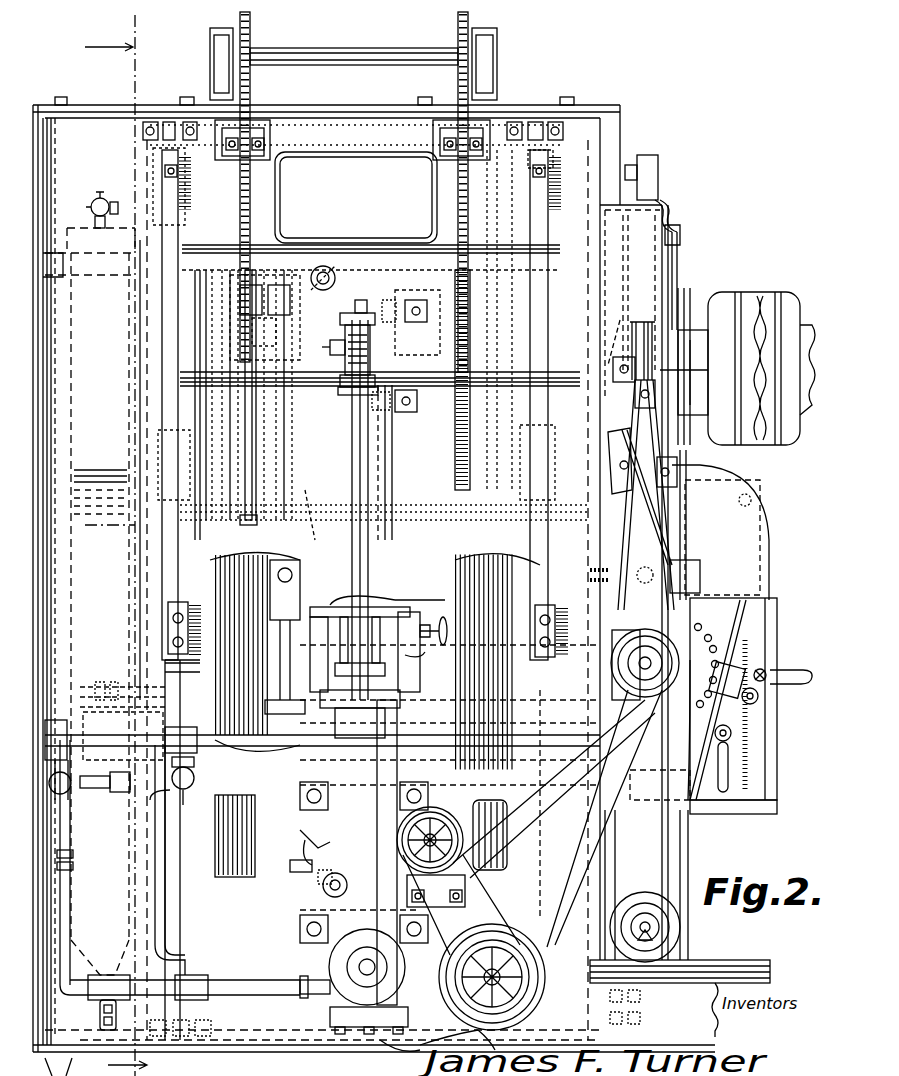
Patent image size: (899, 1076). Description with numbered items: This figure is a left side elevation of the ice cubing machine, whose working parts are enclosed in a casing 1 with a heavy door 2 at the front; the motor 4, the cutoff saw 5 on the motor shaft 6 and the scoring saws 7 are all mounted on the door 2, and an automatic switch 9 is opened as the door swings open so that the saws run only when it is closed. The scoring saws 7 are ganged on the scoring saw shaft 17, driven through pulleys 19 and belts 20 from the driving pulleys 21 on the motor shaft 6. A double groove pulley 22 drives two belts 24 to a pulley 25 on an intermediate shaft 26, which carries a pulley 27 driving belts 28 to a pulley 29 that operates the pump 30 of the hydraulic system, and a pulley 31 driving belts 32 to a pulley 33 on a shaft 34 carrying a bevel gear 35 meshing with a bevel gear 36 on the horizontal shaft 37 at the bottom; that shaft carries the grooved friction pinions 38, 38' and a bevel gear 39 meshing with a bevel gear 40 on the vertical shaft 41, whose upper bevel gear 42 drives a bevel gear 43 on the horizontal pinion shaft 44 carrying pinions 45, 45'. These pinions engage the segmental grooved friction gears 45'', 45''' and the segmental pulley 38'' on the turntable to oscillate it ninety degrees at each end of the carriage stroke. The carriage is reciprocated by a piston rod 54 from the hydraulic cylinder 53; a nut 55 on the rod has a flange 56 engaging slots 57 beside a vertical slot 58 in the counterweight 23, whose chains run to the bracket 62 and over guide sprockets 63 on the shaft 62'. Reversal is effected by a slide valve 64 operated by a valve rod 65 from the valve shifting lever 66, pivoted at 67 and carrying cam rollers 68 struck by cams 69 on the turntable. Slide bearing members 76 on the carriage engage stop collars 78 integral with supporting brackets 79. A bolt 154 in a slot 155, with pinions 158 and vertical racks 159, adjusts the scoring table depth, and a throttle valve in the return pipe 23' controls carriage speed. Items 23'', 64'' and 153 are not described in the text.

The casing 1 is at (88, 118).
The door 2 is at (675, 212).
The motor 4 is at (756, 266).
The cutoff saw 5 is at (640, 247).
The motor shaft 6 is at (728, 320).
The scoring saws 7 is at (645, 628).
The automatic switch 9 is at (658, 170).
The scoring saw shaft 17 is at (680, 642).
The pulleys 19 is at (690, 612).
The belts 20 is at (672, 530).
The driving pulleys 21 is at (633, 328).
The double groove pulley 22 is at (672, 728).
The counterweight 23 is at (240, 563).
The pipe 23' is at (178, 885).
The pipe connection 23'' is at (322, 859).
The belts 24 is at (612, 852).
The pulley 25 is at (436, 1050).
The intermediate shaft 26 is at (454, 979).
The pulley 27 is at (555, 948).
The belts 28 is at (390, 1058).
The pulley 29 is at (327, 1002).
The pump 30 is at (330, 962).
The pulley 31 is at (481, 1047).
The belts 32 is at (558, 912).
The pulley 33 is at (437, 808).
The shaft 34 is at (529, 827).
The bevel gear 35 is at (466, 812).
The bevel gear 36 is at (436, 900).
The horizontal shaft 37 is at (312, 838).
The grooved friction pinion 38 is at (326, 692).
The grooved friction pinion 38' is at (236, 849).
The segmental grooved friction pulley 38'' is at (530, 583).
The bevel gear 39 is at (340, 878).
The bevel gear 40 is at (360, 815).
The vertical shaft 41 is at (392, 492).
The bevel gear 42 is at (418, 400).
The bevel gear 43 is at (398, 320).
The horizontal pinion shaft 44 is at (385, 253).
The grooved friction pinion 45 is at (459, 251).
The grooved friction pinion 45' is at (282, 375).
The segmental grooved friction gear 45'' is at (390, 586).
The segmental grooved friction gear 45''' is at (317, 509).
The hydraulic cylinder 53 is at (300, 918).
The piston rod 54 is at (352, 437).
The nut 55 is at (350, 387).
The flange 56 is at (345, 378).
The slots 57 is at (340, 350).
The vertical slot 58 is at (362, 313).
The bracket 62 is at (353, 94).
The shaft 62' is at (354, 39).
The guide sprockets 63 is at (252, 21).
The slide valve 64 is at (450, 794).
The pump arm 64'' is at (429, 669).
The valve rod 65 is at (441, 629).
The valve shifting lever 66 is at (345, 440).
The pivot 67 is at (358, 517).
The cam rollers 68 is at (332, 272).
The cams 69 is at (330, 596).
The slide bearing members 76 is at (556, 190).
The stop collars 78 is at (530, 122).
The supporting brackets 79 is at (562, 130).
The plate 153 is at (766, 809).
The bolt 154 is at (731, 733).
The slot 155 is at (729, 772).
The pinions 158 is at (760, 697).
The vertical racks 159 is at (754, 708).